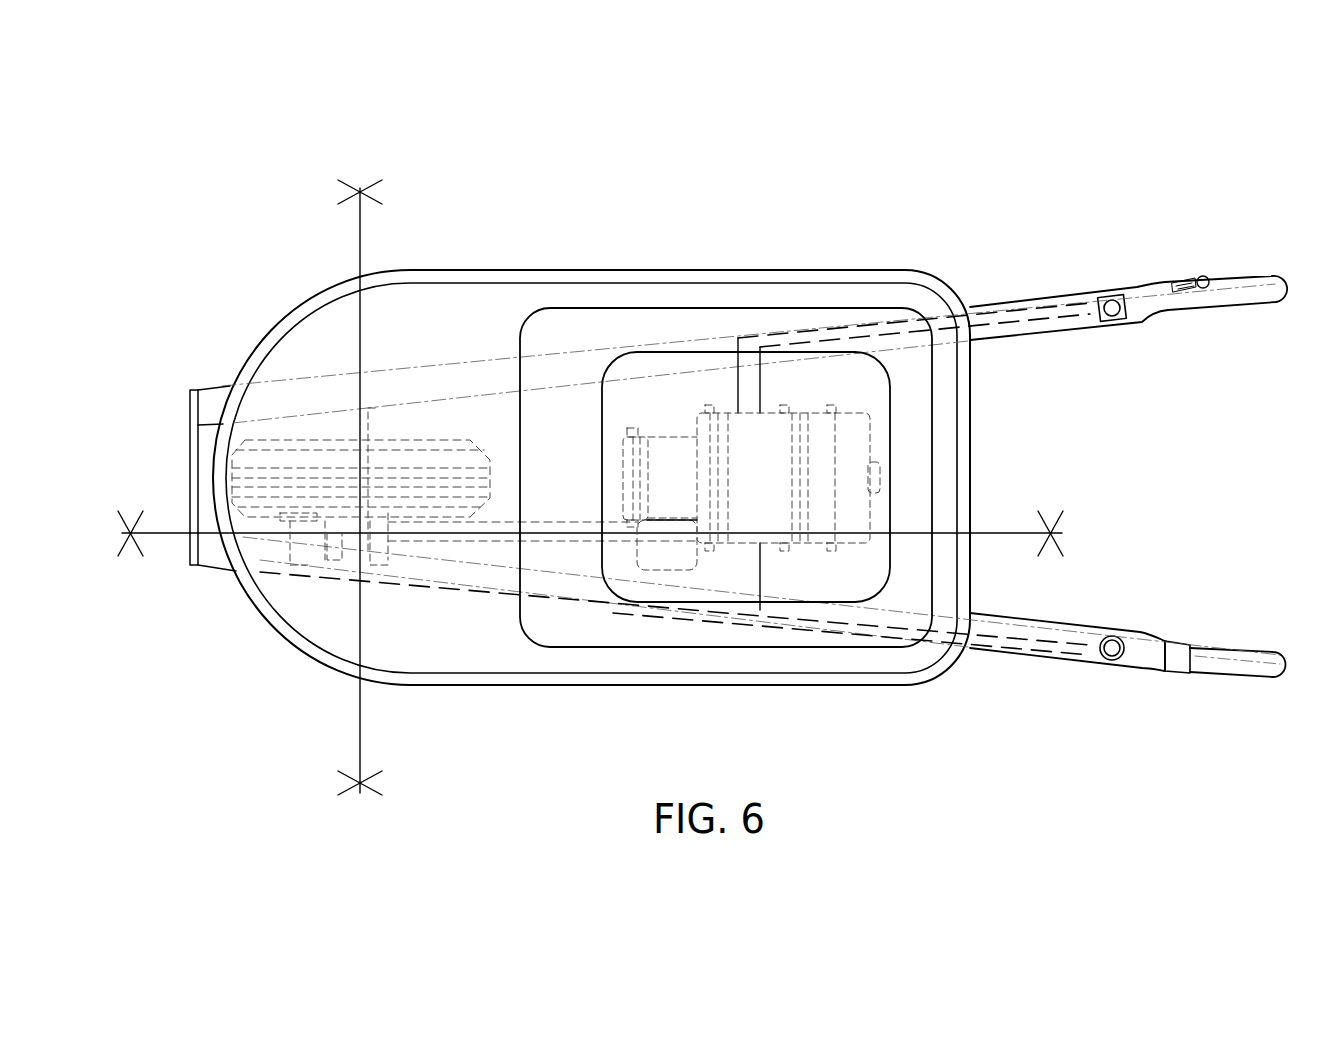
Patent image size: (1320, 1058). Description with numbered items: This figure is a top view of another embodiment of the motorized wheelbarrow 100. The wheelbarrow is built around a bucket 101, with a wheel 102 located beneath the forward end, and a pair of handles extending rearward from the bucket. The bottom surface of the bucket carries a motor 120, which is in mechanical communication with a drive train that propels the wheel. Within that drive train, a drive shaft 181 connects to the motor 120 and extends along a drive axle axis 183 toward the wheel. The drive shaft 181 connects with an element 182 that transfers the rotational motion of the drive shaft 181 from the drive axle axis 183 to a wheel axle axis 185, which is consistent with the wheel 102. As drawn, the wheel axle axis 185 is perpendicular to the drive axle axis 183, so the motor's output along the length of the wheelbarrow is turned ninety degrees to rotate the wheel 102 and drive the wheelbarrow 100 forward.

The motorized wheelbarrow 100 is at (1116, 134).
The bucket 101 is at (855, 270).
The wheel 102 is at (270, 455).
The motor 120 is at (672, 463).
The drive shaft 181 is at (468, 540).
The element 182 is at (343, 560).
The drive axle axis 183 is at (165, 535).
The wheel axle axis 185 is at (360, 240).